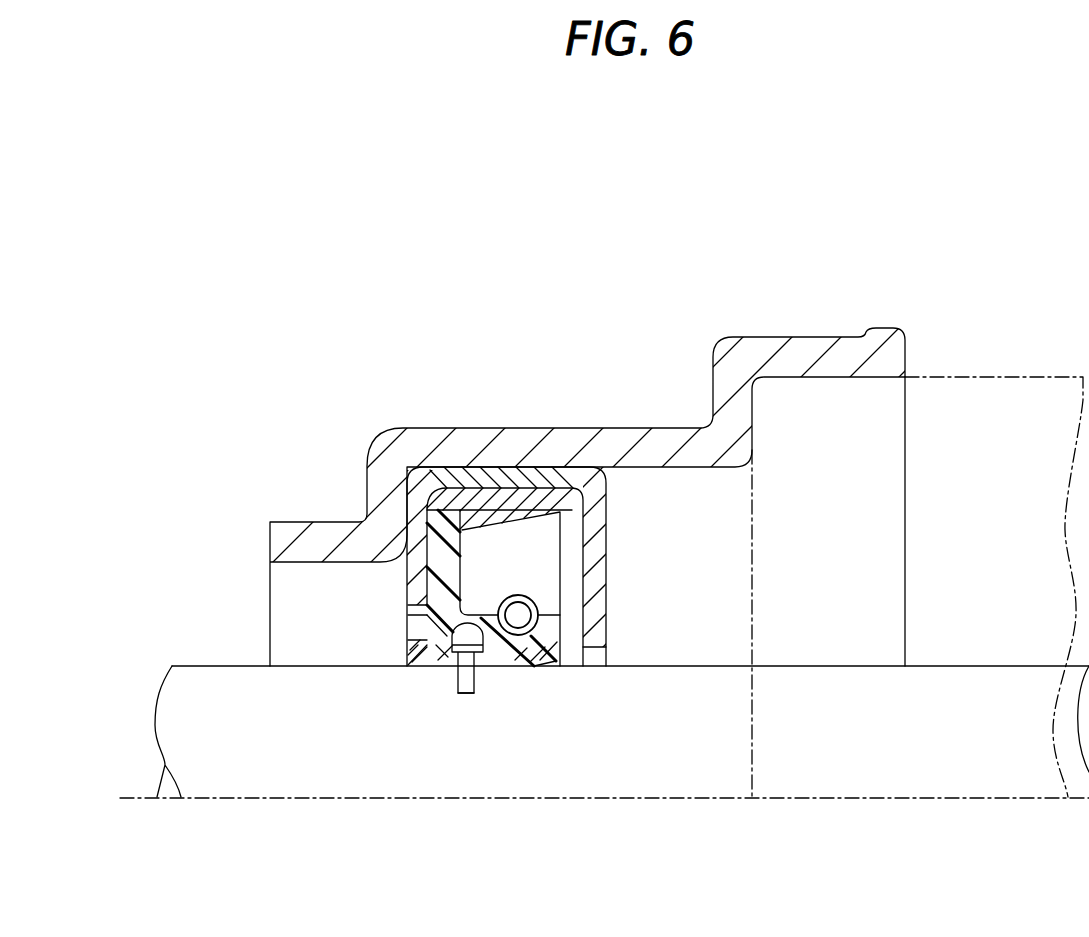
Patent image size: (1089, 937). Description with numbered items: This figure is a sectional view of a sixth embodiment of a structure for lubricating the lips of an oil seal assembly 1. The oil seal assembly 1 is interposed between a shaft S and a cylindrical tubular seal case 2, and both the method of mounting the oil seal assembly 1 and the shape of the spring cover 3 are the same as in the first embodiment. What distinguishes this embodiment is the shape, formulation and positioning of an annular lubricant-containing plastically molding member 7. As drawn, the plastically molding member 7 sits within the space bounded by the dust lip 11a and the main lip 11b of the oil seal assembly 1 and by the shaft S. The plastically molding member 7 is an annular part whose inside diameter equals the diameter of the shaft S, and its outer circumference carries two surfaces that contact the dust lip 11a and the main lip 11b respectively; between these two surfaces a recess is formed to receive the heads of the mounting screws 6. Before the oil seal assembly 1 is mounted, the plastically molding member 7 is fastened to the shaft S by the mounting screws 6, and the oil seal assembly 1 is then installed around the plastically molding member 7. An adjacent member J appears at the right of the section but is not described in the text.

The oil seal assembly 1 is at (394, 577).
The cylindrical tubular seal case 2 is at (578, 415).
The spring cover 3 is at (603, 560).
The mounting screws 6 is at (465, 696).
The annular lubricant-containing plastically molding member 7 is at (442, 657).
The dust lip 11a is at (410, 645).
The main lip 11b is at (527, 652).
The shaft S is at (212, 785).
The adjacent member J is at (991, 377).